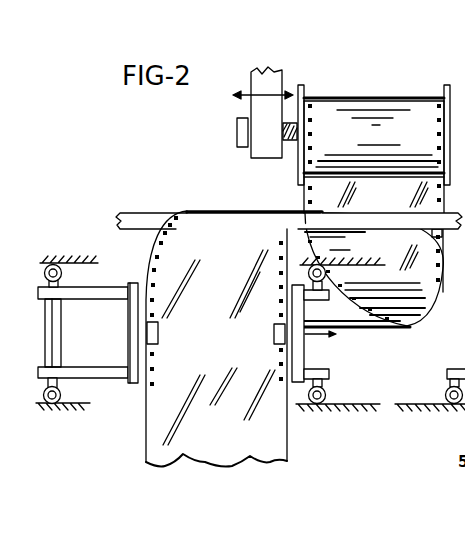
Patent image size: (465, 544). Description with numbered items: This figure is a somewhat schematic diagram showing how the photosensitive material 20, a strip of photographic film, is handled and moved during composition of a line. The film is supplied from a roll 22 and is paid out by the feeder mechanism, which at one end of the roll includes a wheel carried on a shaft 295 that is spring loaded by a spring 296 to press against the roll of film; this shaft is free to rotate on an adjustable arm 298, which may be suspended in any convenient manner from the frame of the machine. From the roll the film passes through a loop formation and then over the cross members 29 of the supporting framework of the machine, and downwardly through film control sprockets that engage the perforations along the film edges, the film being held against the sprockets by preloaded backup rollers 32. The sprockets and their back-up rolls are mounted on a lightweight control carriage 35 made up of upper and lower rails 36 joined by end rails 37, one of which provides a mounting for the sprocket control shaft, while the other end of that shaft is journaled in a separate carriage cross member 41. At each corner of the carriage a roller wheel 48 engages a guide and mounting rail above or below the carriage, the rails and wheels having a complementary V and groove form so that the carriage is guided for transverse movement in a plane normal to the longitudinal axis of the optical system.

The photosensitive material 20 is at (213, 453).
The roll 22 is at (392, 96).
The cross members 29 is at (142, 222).
The backup rollers 32 is at (274, 334).
The control carriage 35 is at (251, 335).
The upper and lower rails 36 is at (98, 372).
The end rails 37 is at (52, 355).
The carriage cross member 41 is at (132, 375).
The roller wheel 48 is at (52, 263).
The shaft 295 is at (237, 128).
The spring 296 is at (287, 142).
The adjustable arm 298 is at (263, 80).